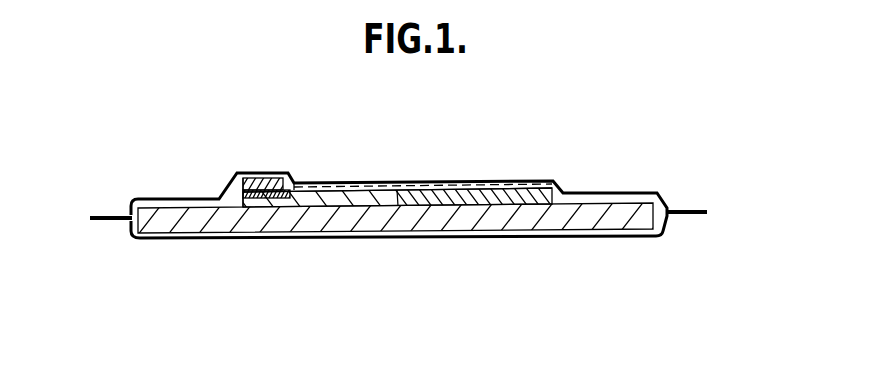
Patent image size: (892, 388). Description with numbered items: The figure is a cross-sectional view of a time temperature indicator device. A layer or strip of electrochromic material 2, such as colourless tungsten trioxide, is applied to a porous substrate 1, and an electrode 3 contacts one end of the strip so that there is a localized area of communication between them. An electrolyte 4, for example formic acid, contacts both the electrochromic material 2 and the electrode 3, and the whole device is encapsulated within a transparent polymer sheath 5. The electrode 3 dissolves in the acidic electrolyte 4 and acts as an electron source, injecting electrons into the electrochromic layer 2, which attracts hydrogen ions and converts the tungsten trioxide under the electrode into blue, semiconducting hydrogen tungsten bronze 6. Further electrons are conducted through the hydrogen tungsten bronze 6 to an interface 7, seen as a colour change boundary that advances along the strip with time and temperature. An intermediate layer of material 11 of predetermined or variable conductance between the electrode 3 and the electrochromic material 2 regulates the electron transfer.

The porous substrate 1 is at (202, 220).
The electrochromic material 2 is at (463, 197).
The electrode 3 is at (268, 172).
The electrolyte 4 is at (562, 192).
The transparent polymer sheath 5 is at (697, 216).
The hydrogen tungsten bronze 6 is at (353, 198).
The interface 7 is at (401, 197).
The intermediate layer of material 11 is at (246, 195).